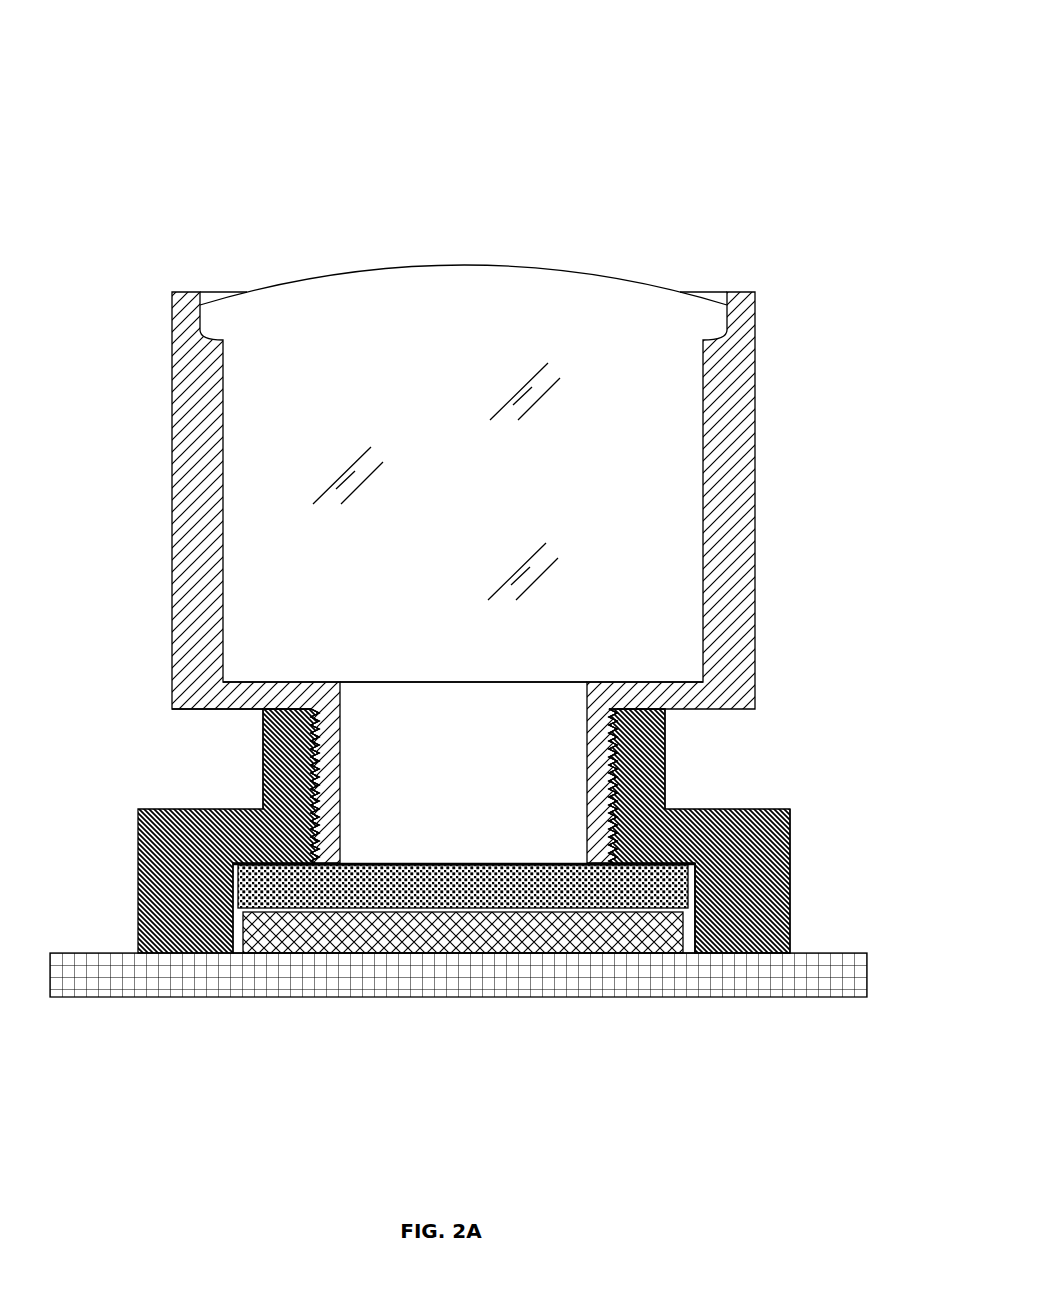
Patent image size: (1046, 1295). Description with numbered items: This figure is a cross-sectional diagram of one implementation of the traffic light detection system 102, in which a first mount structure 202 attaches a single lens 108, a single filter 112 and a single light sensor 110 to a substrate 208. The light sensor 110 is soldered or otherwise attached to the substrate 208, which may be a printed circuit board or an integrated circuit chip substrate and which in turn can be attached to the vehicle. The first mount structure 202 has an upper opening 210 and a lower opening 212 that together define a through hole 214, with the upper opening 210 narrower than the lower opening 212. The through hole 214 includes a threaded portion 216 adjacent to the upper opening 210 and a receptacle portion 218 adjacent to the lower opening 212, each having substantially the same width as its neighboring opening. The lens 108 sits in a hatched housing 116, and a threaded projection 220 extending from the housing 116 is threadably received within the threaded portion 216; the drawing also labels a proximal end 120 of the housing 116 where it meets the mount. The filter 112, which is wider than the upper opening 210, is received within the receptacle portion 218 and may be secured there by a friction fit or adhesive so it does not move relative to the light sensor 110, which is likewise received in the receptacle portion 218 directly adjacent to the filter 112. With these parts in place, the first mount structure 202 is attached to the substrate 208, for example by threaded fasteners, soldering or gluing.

The traffic light detection system 102 is at (352, 98).
The lens 108 is at (449, 509).
The light sensor 110 is at (268, 953).
The filter 112 is at (451, 826).
The housing 116 is at (755, 486).
The proximal end 120 is at (195, 708).
The first mount structure 202 is at (138, 930).
The substrate 208 is at (421, 997).
The upper opening 210 is at (615, 710).
The lower opening 212 is at (698, 955).
The through hole 214 is at (692, 884).
The threaded portion 216 is at (313, 758).
The receptacle portion 218 is at (695, 928).
The threaded projection 220 is at (597, 752).